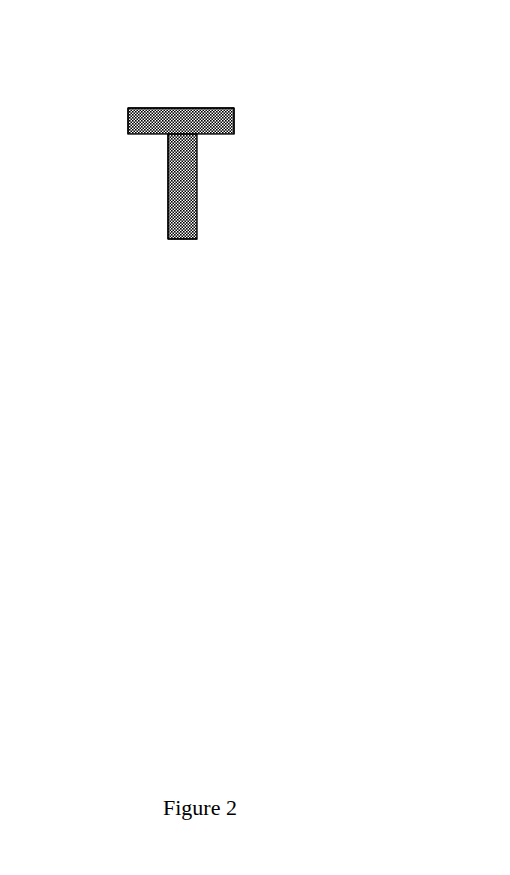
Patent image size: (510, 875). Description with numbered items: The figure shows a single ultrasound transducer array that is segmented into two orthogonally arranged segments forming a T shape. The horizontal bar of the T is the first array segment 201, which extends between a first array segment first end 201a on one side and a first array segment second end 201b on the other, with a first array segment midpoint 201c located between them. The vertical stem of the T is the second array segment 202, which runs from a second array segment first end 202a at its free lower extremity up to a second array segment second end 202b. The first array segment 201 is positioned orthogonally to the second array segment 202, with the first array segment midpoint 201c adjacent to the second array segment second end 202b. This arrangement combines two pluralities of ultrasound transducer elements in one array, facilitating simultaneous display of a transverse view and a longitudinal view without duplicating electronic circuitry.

The first array segment 201 is at (226, 108).
The first array segment first end 201a is at (128, 110).
The first array segment second end 201b is at (234, 127).
The first array segment midpoint 201c is at (179, 108).
The second array segment 202 is at (197, 219).
The second array segment first end 202a is at (168, 240).
The second array segment second end 202b is at (167, 136).